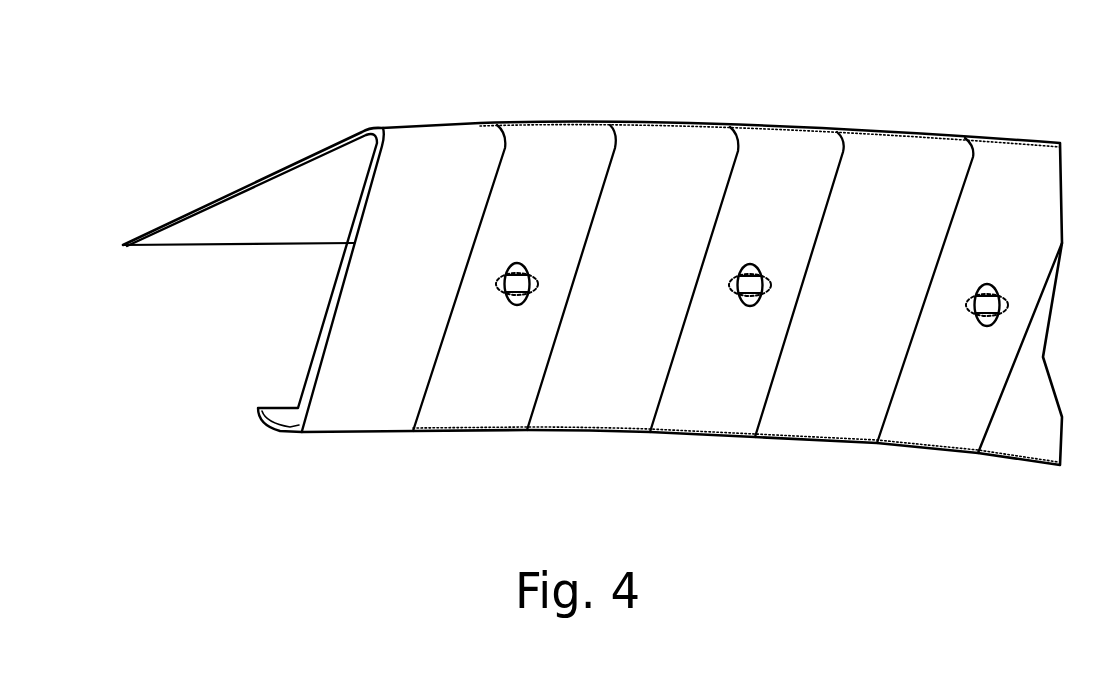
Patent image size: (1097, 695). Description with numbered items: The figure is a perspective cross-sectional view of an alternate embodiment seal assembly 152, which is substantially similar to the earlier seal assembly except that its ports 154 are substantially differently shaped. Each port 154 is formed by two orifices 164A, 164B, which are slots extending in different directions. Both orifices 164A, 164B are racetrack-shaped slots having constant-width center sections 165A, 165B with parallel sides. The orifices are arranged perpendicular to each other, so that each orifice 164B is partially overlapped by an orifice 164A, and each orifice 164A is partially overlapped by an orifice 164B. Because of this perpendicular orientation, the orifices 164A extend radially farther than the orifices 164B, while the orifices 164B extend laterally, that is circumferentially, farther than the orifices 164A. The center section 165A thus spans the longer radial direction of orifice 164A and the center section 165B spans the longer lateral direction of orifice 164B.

The seal assembly 152 is at (194, 112).
The ports 154 is at (523, 249).
The orifice 164A is at (531, 280).
The orifice 164B is at (497, 284).
The constant-width center section 165A is at (772, 270).
The constant-width center section 165B is at (758, 309).